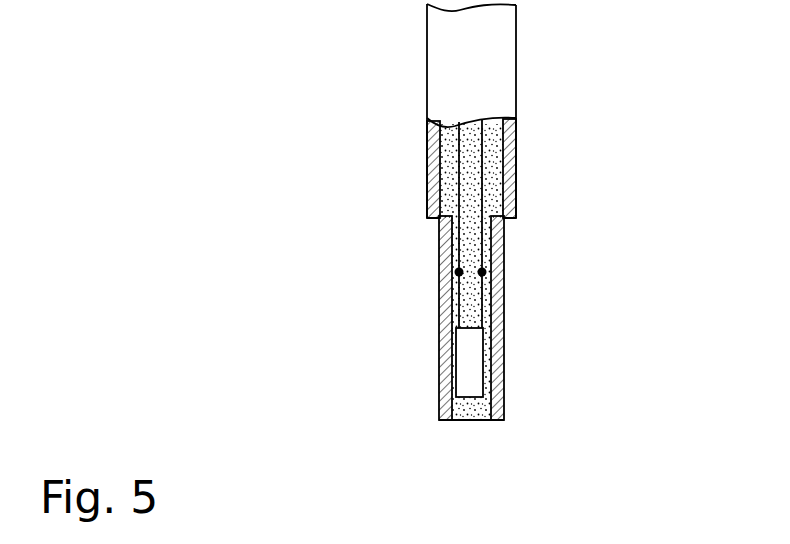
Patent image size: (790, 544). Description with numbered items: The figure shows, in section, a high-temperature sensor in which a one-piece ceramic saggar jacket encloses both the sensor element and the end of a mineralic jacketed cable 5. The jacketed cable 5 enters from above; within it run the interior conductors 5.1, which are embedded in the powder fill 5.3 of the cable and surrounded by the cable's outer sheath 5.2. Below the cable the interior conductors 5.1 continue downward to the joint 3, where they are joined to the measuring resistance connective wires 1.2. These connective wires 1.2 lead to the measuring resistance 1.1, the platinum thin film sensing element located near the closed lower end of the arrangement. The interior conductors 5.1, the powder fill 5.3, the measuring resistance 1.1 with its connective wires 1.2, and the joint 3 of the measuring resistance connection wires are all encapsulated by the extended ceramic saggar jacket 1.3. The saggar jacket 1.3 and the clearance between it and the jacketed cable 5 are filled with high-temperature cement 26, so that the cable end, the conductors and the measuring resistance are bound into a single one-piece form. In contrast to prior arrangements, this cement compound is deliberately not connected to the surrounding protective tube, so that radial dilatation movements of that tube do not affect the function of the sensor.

The jacketed cable 5 is at (497, 60).
The cable sheath 5.2 is at (507, 137).
The powder fill 5.3 is at (508, 198).
The interior conductors 5.1 is at (485, 253).
The welded joint 3 is at (450, 266).
The platinum thin film measuring resistance 1.1 is at (438, 400).
The measuring resistance connective wires 1.2 is at (486, 300).
The ceramic saggar jacket 1.3 is at (468, 387).
The high-temperature cement 26 is at (480, 420).